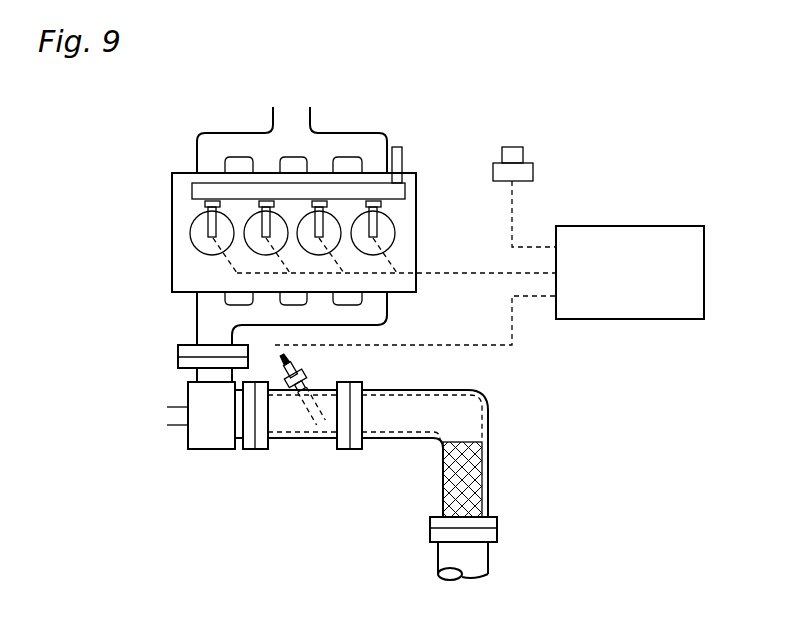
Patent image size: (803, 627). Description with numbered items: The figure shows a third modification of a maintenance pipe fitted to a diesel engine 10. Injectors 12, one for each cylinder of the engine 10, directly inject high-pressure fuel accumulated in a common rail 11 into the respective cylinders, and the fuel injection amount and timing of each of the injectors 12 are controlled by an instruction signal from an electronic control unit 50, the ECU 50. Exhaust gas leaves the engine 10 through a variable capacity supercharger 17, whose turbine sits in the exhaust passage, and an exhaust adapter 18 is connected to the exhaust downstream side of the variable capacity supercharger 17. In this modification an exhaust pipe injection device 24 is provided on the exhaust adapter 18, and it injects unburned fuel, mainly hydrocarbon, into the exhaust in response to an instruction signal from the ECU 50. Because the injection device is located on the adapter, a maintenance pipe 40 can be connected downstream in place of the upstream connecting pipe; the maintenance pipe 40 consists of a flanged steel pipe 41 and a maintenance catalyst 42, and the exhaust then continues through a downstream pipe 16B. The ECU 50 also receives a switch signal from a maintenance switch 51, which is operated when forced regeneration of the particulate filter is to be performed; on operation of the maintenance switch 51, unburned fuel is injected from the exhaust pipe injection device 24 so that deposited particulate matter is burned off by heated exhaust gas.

The diesel engine 10 is at (416, 232).
The common rail 11 is at (381, 190).
The injectors 12 is at (215, 222).
The tail pipe 16B is at (490, 559).
The variable capacity supercharger 17 is at (211, 427).
The exhaust adapter 18 is at (305, 440).
The exhaust pipe injection device 24 is at (307, 380).
The maintenance pipe 40 is at (497, 430).
The flanged steel pipe 41 is at (393, 440).
The maintenance catalyst 42 is at (482, 480).
The electronic control unit 50 is at (637, 226).
The maintenance switch 51 is at (535, 170).